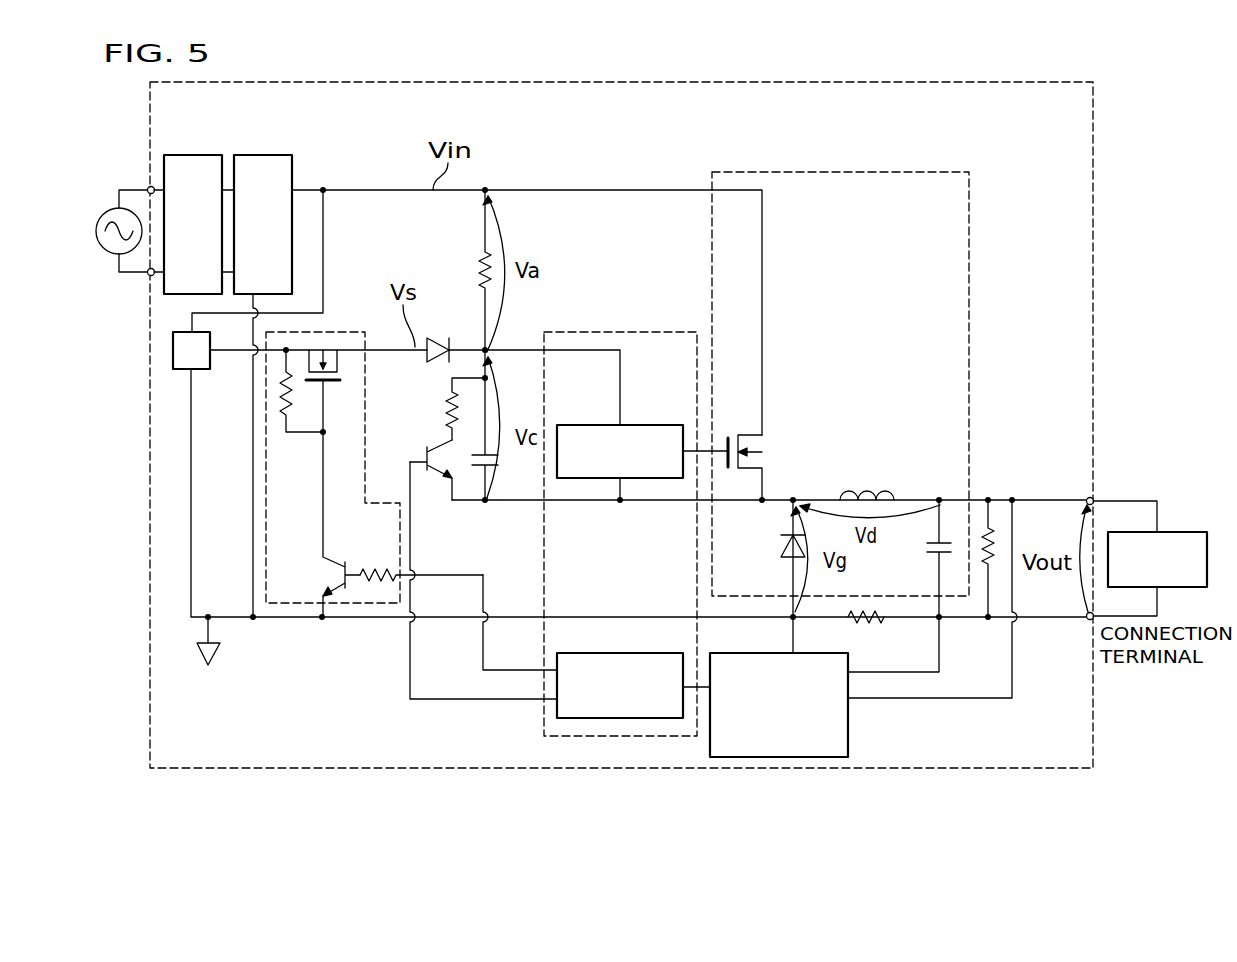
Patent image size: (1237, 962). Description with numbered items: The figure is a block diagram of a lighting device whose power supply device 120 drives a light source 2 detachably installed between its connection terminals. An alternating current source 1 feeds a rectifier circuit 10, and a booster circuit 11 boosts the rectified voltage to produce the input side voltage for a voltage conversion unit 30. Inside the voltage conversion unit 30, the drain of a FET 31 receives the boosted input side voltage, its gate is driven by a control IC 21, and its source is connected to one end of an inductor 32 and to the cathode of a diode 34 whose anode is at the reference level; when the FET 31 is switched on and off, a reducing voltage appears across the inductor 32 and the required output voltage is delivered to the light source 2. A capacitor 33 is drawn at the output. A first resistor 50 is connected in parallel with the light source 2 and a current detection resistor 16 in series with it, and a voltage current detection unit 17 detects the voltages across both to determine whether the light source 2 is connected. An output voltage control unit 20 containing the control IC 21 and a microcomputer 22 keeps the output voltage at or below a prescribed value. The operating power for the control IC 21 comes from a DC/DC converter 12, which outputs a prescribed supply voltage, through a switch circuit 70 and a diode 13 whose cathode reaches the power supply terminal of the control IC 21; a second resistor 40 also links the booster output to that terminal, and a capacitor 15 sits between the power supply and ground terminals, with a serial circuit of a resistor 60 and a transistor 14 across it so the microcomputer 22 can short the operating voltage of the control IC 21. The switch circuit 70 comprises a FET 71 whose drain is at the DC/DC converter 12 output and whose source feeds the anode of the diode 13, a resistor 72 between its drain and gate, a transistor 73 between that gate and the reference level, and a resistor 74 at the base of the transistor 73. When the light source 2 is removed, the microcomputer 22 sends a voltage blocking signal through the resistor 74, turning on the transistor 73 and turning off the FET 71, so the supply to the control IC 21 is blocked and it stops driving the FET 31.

The alternating current source 1 is at (118, 208).
The light source 2 is at (1183, 530).
The rectifier circuit 10 is at (192, 155).
The booster circuit 11 is at (262, 155).
The DC/DC converter 12 is at (201, 372).
The diode 13 is at (440, 337).
The transistor 14 is at (440, 443).
The capacitor 15 is at (478, 470).
The current detection resistor 16 is at (862, 622).
The voltage current detection unit 17 is at (735, 652).
The output voltage control unit 20 is at (638, 331).
The control IC 21 is at (648, 424).
The microcomputer 22 is at (620, 651).
The voltage conversion unit 30 is at (893, 171).
The FET 31 is at (762, 443).
The inductor 32 is at (867, 493).
The output capacitor 33 is at (925, 552).
The diode 34 is at (778, 545).
The second resistor 40 is at (478, 267).
The first resistor 50 is at (993, 522).
The resistor 60 is at (442, 410).
The switch circuit 70 is at (345, 330).
The FET 71 is at (327, 390).
The resistor 72 is at (277, 407).
The transistor 73 is at (320, 573).
The resistor 74 is at (377, 565).
The power supply device 120 is at (1093, 108).